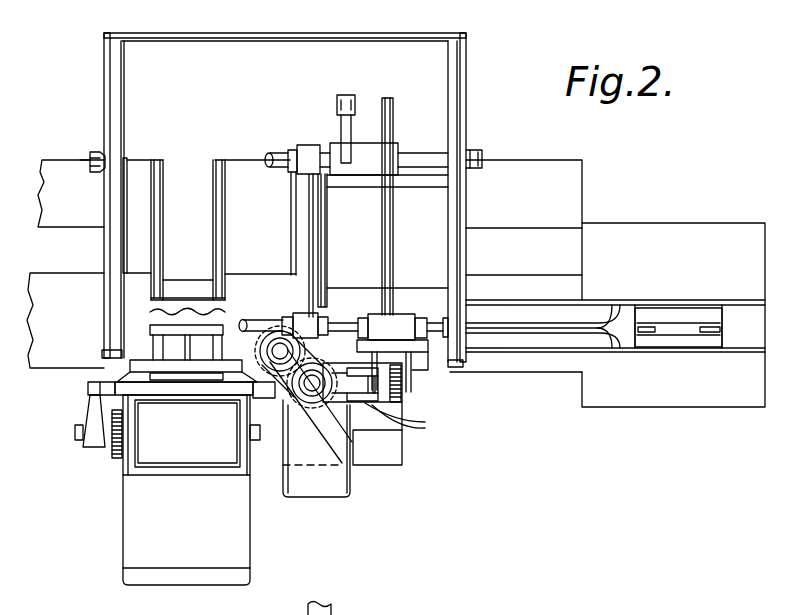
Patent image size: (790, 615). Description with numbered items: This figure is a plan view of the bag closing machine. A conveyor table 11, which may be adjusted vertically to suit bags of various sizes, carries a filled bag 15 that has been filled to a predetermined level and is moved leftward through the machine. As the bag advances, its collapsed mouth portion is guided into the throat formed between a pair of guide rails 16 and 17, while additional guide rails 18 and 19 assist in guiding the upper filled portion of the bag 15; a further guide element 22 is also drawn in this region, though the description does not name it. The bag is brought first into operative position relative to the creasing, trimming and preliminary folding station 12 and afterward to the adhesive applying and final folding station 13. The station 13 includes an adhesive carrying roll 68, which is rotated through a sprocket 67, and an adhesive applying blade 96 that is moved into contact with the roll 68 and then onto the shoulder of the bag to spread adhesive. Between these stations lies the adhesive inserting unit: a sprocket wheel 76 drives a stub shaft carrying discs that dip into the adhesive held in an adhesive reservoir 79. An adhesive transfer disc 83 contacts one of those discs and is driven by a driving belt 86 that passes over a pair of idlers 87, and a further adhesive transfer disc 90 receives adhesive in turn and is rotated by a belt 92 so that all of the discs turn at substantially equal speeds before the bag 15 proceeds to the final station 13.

The conveyor table 11 is at (497, 370).
The creasing, trimming and preliminary folding station 12 is at (415, 304).
The adhesive applying and final folding station 13 is at (232, 300).
The filled bag 15 is at (678, 315).
The guide rail 16 is at (586, 318).
The guide rail 17 is at (586, 335).
The guide rail 18 is at (643, 305).
The guide rail 19 is at (640, 352).
The stop bar 22 is at (712, 340).
The sprocket 67 is at (112, 445).
The adhesive carrying roll 68 is at (158, 453).
The sprocket wheel 76 is at (401, 397).
The adhesive reservoir 79 is at (289, 497).
The adhesive transfer disc 83 is at (291, 405).
The driving belt 86 is at (320, 410).
The idlers 87 is at (409, 420).
The adhesive transfer disc 90 is at (260, 356).
The belt 92 is at (314, 352).
The adhesive applying blade 96 is at (183, 333).